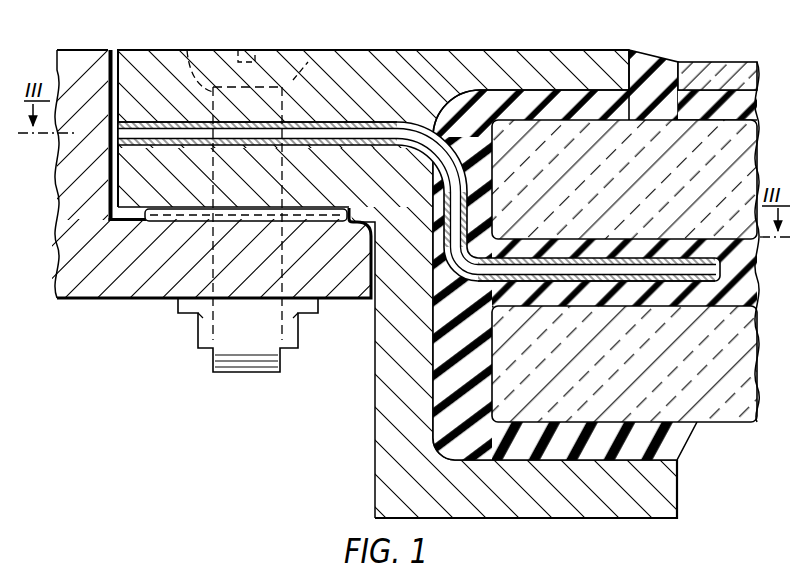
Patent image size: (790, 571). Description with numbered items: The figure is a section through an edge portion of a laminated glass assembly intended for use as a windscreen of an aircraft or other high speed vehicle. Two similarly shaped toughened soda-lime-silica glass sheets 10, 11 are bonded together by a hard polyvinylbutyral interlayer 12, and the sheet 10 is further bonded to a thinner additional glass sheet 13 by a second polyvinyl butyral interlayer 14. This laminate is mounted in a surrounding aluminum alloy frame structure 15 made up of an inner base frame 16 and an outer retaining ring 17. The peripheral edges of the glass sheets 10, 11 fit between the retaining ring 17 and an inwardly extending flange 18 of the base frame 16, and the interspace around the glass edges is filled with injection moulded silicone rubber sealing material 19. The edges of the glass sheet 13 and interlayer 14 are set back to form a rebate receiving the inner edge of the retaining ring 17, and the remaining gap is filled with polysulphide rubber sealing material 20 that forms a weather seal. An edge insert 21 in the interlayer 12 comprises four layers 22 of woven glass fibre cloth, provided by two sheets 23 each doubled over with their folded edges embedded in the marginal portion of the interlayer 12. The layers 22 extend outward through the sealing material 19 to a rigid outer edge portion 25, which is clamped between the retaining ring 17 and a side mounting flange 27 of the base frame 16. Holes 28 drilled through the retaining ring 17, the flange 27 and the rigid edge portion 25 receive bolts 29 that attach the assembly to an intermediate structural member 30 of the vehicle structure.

The glass sheet 10 is at (670, 130).
The glass sheet 11 is at (733, 405).
The interlayer 12 is at (755, 273).
The additional glass sheet 13 is at (723, 75).
The interlayer 14 is at (747, 93).
The frame structure 15 is at (396, 333).
The inner base frame 16 is at (375, 369).
The outer retaining ring 17 is at (142, 62).
The inwardly extending flange 18 is at (676, 494).
The silicone rubber sealing material 19 is at (440, 417).
The polysulphide rubber sealing material 20 is at (645, 62).
The edge insert 21 is at (571, 256).
The layers of woven glass fibre cloth 22 is at (423, 114).
The sheets of woven glass fibre cloth 23 is at (730, 307).
The rigid outer edge portion 25 is at (344, 117).
The side mounting flange 27 is at (127, 183).
The holes 28 is at (193, 67).
The bolts 29 is at (275, 62).
The intermediate structural member 30 is at (78, 263).